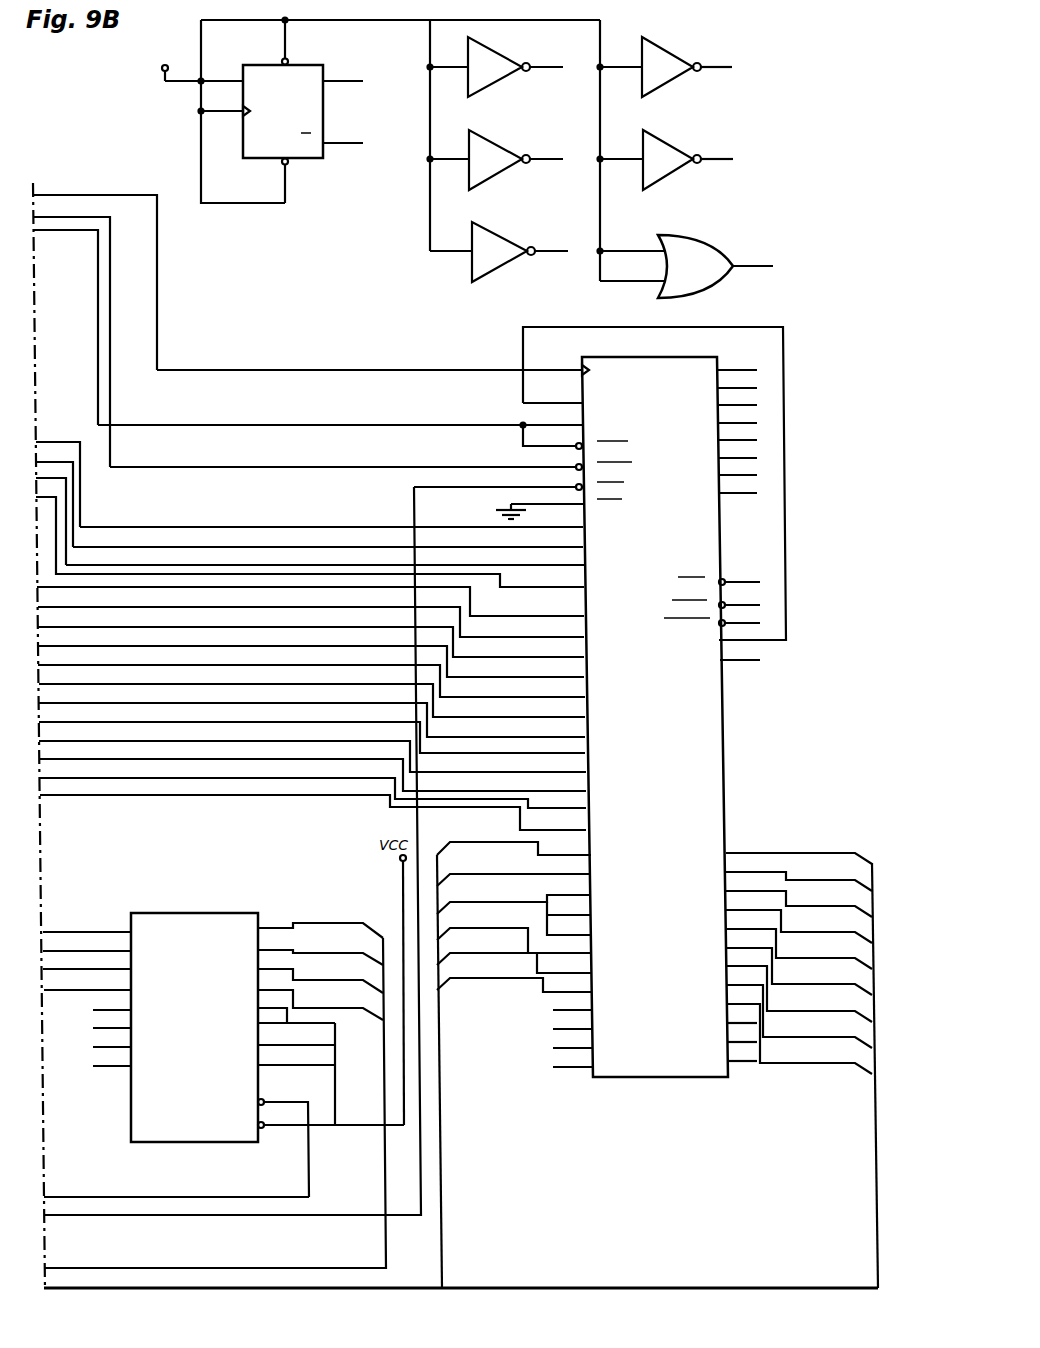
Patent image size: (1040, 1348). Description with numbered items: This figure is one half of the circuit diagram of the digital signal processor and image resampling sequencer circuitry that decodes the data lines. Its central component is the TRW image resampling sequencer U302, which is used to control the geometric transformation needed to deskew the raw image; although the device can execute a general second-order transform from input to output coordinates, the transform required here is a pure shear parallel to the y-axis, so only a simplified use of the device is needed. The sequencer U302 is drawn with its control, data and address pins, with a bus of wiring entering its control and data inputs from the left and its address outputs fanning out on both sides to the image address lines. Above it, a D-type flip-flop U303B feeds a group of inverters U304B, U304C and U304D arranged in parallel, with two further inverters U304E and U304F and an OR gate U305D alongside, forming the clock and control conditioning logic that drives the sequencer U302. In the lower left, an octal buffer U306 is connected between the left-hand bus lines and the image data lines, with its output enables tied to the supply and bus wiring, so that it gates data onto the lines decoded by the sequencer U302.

The image resampling sequencer U302 is at (469, 713).
The 74HC74 D flip-flop U303B is at (274, 111).
The 74HC04 inverter U304B is at (498, 63).
The 74HC04 inverter U304C is at (500, 154).
The 74HC04 inverter U304D is at (501, 248).
The 74HC04 inverter U304E is at (670, 62).
The 74HC04 inverter U304F is at (671, 156).
The 74HC32 OR gate U305D is at (697, 262).
The 74HC244 octal buffer U306 is at (223, 1044).